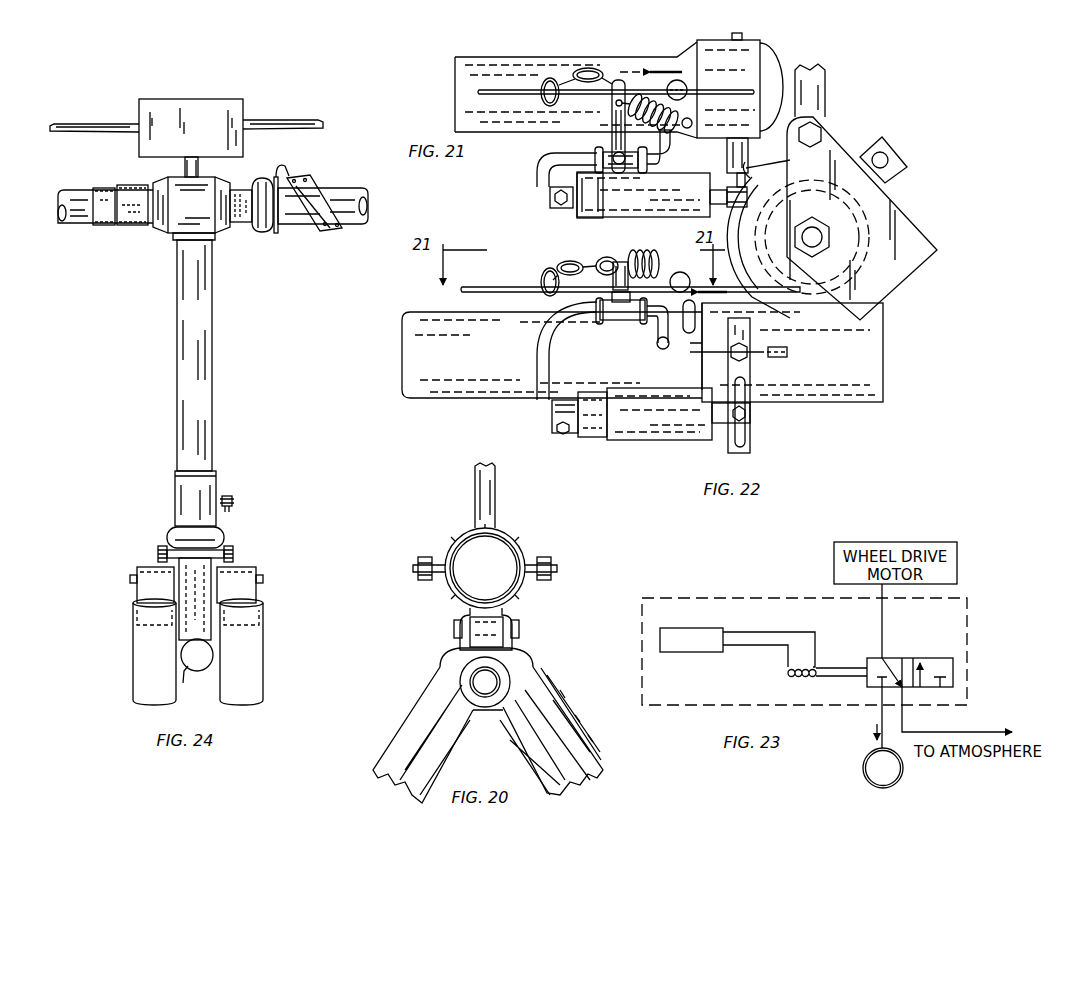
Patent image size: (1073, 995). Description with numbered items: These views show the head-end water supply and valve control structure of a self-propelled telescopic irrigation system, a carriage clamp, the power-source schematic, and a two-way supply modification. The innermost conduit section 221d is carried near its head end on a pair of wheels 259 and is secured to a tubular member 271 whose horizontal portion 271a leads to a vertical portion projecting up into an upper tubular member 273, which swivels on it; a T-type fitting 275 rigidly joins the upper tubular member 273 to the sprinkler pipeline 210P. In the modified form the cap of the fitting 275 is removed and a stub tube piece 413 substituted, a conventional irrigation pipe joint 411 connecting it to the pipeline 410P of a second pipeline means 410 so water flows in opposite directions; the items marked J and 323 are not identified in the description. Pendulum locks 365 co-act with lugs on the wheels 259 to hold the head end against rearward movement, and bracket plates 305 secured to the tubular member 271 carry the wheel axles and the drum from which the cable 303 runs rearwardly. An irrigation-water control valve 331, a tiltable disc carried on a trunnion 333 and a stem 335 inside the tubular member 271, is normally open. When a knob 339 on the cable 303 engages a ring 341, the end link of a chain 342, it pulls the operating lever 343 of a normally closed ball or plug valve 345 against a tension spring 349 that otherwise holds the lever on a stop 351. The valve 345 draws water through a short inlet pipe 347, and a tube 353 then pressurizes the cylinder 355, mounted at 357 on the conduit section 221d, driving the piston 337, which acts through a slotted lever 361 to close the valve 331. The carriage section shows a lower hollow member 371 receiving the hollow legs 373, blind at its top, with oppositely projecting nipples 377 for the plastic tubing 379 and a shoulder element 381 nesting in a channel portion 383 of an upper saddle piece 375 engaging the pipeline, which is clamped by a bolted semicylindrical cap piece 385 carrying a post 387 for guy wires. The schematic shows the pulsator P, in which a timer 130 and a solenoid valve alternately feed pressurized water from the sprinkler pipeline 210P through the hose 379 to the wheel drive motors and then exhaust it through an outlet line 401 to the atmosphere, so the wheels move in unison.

In FIG. 24, the pulsator P is at (201, 99).
In FIG. 23, the pulsator P is at (970, 623).
In FIG. 24, the joint J is at (236, 538).
In FIG. 23, the timer 130 is at (702, 653).
In FIG. 20, the sprinkler pipeline 210P is at (520, 537).
In FIG. 23, the sprinkler pipeline 210P is at (903, 776).
In FIG. 21, the conduit section 221d is at (497, 57).
In FIG. 22, the conduit section 221d is at (466, 400).
In FIG. 24, the pair of wheels 259 is at (133, 660).
In FIG. 24, the tubular member 271 is at (213, 671).
In FIG. 21, the tubular member 271 is at (755, 39).
In FIG. 22, the tubular member 271 is at (842, 404).
In FIG. 24, the horizontal portion 271a is at (194, 685).
In FIG. 24, the upper tubular member 273 is at (212, 379).
In FIG. 24, the fitting 275 is at (156, 230).
In FIG. 21, the cable 303 is at (477, 92).
In FIG. 22, the cable 303 is at (530, 287).
In FIG. 21, the bracket plates 305 is at (908, 219).
In FIG. 24, the set screw 323 is at (234, 500).
In FIG. 21, the irrigation-water control valve 331 is at (778, 63).
In FIG. 22, the irrigation-water control valve 331 is at (772, 346).
In FIG. 21, the trunnion 333 is at (732, 35).
In FIG. 21, the stem 335 is at (750, 176).
In FIG. 21, the piston 337 is at (672, 218).
In FIG. 22, the piston 337 is at (679, 441).
In FIG. 21, the knob 339 is at (687, 96).
In FIG. 22, the knob 339 is at (541, 296).
In FIG. 21, the ring 341 is at (548, 78).
In FIG. 21, the chain 342 is at (585, 68).
In FIG. 21, the operating lever 343 is at (619, 79).
In FIG. 21, the ball or plug valve 345 is at (595, 155).
In FIG. 22, the ball or plug valve 345 is at (641, 323).
In FIG. 21, the inlet pipe 347 is at (670, 150).
In FIG. 21, the tension spring 349 is at (645, 98).
In FIG. 21, the stop 351 is at (592, 218).
In FIG. 22, the stop 351 is at (618, 303).
In FIG. 21, the tube 353 is at (538, 170).
In FIG. 22, the cylinder 355 is at (596, 440).
In FIG. 21, the cylinder mounting 357 is at (550, 199).
In FIG. 22, the cylinder mounting 357 is at (552, 418).
In FIG. 22, the slotted lever 361 is at (751, 437).
In FIG. 24, the pendulum locks 365 is at (140, 595).
In FIG. 20, the lower hollow member 371 is at (530, 662).
In FIG. 20, the hollow legs 373 is at (591, 748).
In FIG. 20, the upper saddle piece 375 is at (522, 601).
In FIG. 20, the nipples 377 is at (462, 675).
In FIG. 24, the plastic tubing 379 is at (96, 126).
In FIG. 20, the plastic tubing 379 is at (470, 686).
In FIG. 23, the plastic tubing 379 is at (882, 615).
In FIG. 20, the shoulder element 381 is at (470, 636).
In FIG. 20, the channel portion 383 is at (460, 622).
In FIG. 20, the cap piece 385 is at (506, 530).
In FIG. 20, the post 387 is at (475, 491).
In FIG. 23, the outlet line 401 is at (902, 729).
In FIG. 24, the second pipeline means 410 is at (80, 191).
In FIG. 24, the pipeline 410P is at (292, 225).
In FIG. 24, the irrigation pipe joint 411 is at (272, 170).
In FIG. 24, the stub tube piece 413 is at (246, 224).